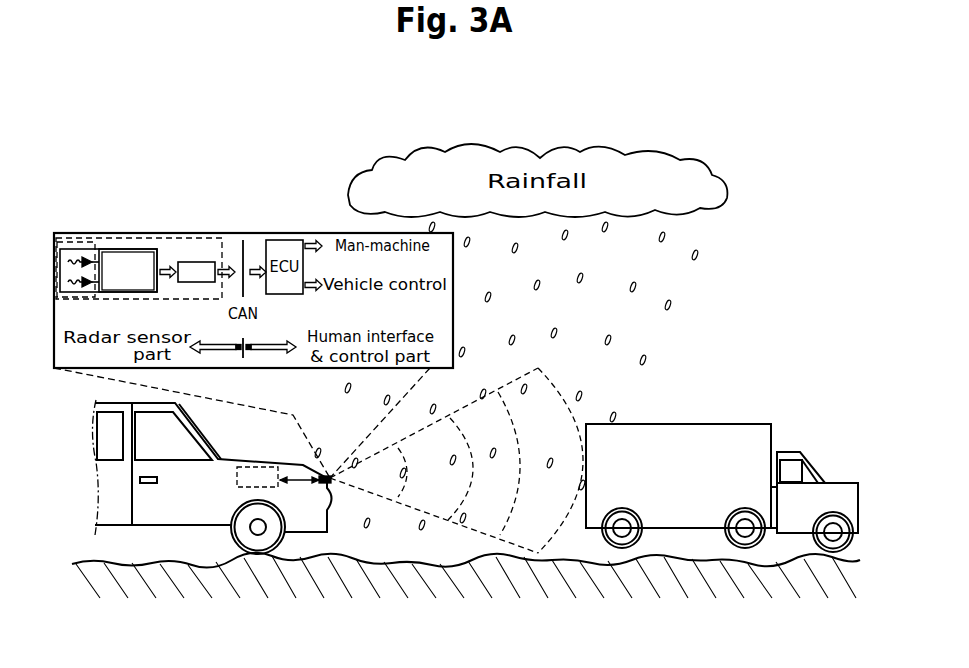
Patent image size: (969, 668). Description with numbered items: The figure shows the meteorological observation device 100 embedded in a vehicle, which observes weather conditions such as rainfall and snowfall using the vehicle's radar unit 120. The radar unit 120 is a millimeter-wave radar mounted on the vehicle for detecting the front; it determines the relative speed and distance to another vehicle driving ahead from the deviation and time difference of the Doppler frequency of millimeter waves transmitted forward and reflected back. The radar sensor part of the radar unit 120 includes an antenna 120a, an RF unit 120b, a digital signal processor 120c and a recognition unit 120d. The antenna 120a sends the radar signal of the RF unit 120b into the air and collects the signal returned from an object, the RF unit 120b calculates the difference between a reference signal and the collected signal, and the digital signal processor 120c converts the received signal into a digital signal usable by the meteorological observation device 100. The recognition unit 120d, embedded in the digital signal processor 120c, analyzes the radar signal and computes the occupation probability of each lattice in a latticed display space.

The meteorological observation device 100 is at (255, 468).
The radar unit 120 is at (208, 238).
The antenna 120a is at (83, 243).
The RF unit 120b is at (112, 248).
The digital signal processor 120c is at (193, 261).
The recognition unit 120d is at (186, 224).